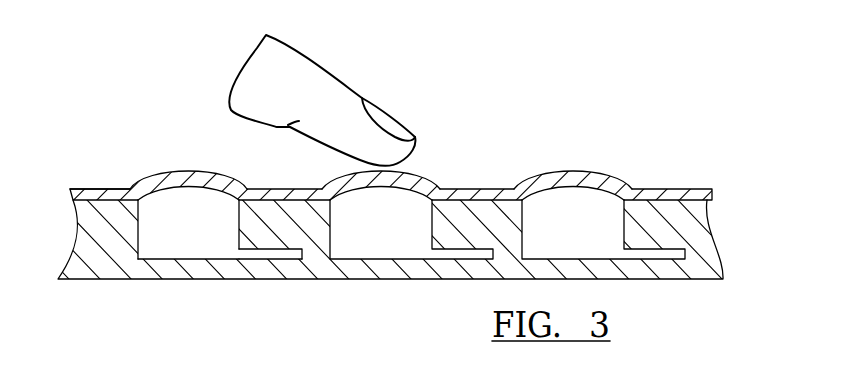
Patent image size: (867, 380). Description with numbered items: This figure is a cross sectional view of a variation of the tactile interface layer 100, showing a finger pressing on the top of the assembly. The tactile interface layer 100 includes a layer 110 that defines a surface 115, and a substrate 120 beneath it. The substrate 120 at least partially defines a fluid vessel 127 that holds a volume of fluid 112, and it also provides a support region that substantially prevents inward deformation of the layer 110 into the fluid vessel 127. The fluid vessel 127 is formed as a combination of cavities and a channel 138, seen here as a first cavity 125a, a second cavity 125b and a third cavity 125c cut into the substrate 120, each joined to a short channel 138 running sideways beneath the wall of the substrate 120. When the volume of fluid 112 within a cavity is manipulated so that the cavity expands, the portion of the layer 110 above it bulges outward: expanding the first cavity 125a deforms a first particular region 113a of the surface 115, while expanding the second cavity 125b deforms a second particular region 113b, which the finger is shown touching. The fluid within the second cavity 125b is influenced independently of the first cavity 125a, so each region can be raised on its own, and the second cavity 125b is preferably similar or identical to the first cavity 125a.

The tactile interface layer 100 is at (404, 185).
The layer 110 is at (677, 195).
The volume of fluid 112 is at (170, 248).
The first particular region 113a is at (188, 168).
The second particular region 113b is at (407, 169).
The surface 115 is at (102, 188).
The substrate 120 is at (688, 230).
The first cavity 125a is at (219, 230).
The second cavity 125b is at (412, 230).
The third cavity 125c is at (602, 230).
The fluid vessel 127 is at (268, 252).
The channel 138 is at (290, 259).